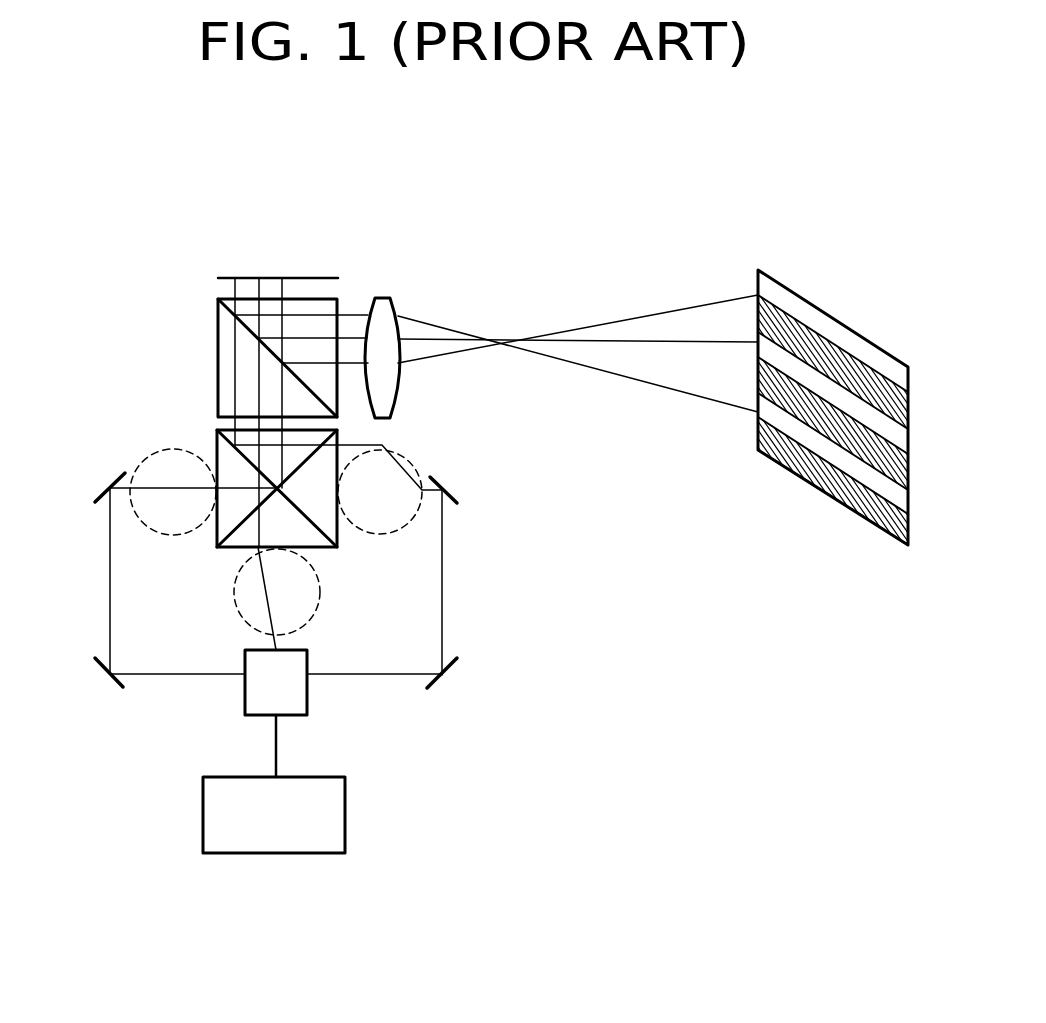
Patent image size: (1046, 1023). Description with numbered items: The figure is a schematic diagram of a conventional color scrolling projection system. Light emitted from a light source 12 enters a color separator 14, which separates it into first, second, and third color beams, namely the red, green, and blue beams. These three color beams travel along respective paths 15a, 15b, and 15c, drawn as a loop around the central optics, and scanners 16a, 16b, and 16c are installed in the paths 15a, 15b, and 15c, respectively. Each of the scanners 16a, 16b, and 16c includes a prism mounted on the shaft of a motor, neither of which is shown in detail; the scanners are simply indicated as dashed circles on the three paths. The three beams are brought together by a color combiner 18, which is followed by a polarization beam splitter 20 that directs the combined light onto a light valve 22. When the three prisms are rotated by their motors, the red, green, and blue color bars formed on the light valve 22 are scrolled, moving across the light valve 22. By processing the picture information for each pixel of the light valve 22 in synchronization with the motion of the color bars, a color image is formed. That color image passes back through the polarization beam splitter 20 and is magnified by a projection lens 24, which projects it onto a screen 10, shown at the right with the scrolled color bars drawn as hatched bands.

The screen 10 is at (832, 500).
The light source 12 is at (203, 814).
The color separator 14 is at (245, 699).
The path 15a is at (110, 580).
The path 15b is at (266, 602).
The path 15c is at (442, 582).
The scanner 16a is at (145, 458).
The scanner 16b is at (318, 606).
The scanner 16c is at (408, 461).
The color combiner 18 is at (218, 440).
The polarization beam splitter 20 is at (218, 358).
The light valve 22 is at (218, 278).
The projection lens 24 is at (383, 298).